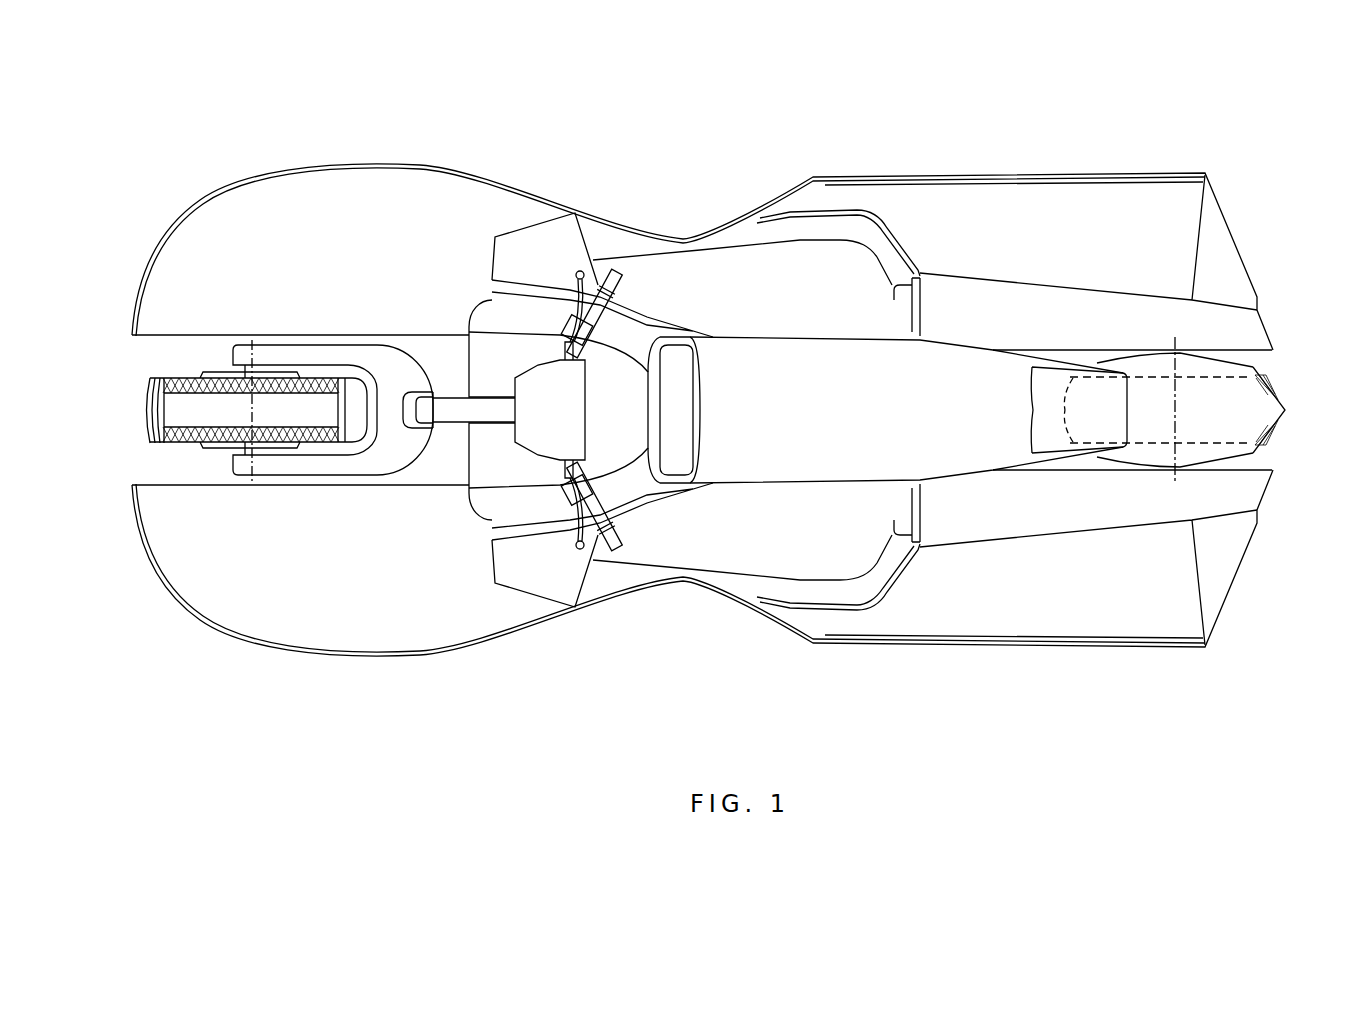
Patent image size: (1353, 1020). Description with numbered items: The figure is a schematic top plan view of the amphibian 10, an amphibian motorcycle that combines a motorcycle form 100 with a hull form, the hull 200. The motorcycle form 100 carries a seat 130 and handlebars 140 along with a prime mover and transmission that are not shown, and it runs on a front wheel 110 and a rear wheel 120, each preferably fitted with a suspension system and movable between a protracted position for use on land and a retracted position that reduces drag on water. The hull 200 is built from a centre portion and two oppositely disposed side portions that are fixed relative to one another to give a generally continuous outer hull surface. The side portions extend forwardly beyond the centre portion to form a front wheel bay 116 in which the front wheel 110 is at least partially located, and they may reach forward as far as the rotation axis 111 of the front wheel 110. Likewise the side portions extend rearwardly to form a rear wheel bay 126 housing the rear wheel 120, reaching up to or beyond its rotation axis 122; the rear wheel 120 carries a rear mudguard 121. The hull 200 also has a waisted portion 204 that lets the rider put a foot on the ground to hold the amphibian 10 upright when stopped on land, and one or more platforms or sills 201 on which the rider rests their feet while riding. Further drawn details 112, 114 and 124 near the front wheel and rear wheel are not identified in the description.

The amphibian 10 is at (652, 182).
The hull 200 is at (1053, 166).
The waisted portion 204 is at (721, 205).
The platforms or sills 201 is at (836, 285).
The front wheel bay 116 is at (146, 358).
The actuator end cap 114 is at (145, 410).
The front wheel 110 is at (150, 437).
The rotation axis 111 is at (262, 463).
The actuator rod 112 is at (456, 418).
The motorcycle form 100 is at (786, 331).
The handlebars 140 is at (620, 538).
The seat 130 is at (896, 415).
The rear wheel 120 is at (1280, 377).
The rear mudguard 121 is at (1224, 410).
The rotation axis 122 is at (1175, 423).
The lower tip region 124 is at (1279, 431).
The rear wheel bay 126 is at (1266, 361).